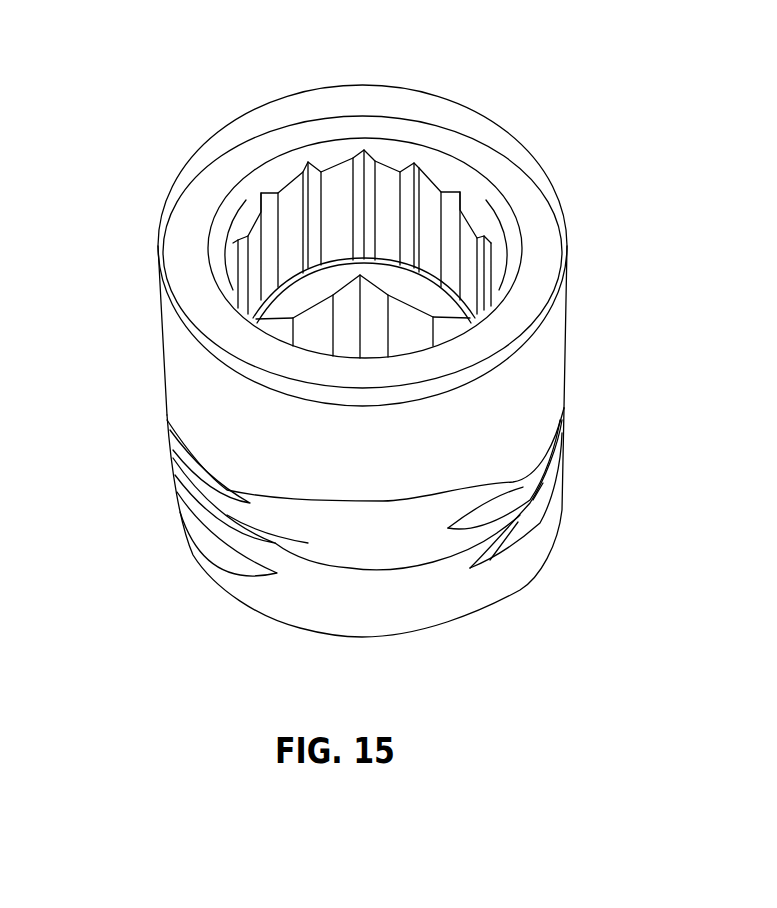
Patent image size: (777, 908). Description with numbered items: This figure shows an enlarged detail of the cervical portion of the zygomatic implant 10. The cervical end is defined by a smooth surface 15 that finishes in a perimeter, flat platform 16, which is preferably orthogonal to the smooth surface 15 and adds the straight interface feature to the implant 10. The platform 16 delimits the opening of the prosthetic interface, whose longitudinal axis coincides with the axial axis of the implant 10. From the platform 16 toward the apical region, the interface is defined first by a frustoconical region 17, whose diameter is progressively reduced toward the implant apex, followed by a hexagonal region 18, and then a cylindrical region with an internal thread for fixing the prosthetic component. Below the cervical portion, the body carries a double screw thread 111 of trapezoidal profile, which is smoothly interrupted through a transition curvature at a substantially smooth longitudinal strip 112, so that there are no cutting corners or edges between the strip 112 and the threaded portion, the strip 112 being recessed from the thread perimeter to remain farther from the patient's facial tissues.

The zygomatic implant 10 is at (593, 145).
The smooth surface 15 is at (243, 423).
The platform 16 is at (548, 248).
The frustoconical region 17 is at (317, 220).
The hexagonal region 18 is at (412, 323).
The screw thread 111 is at (190, 502).
The longitudinal strip 112 is at (412, 601).